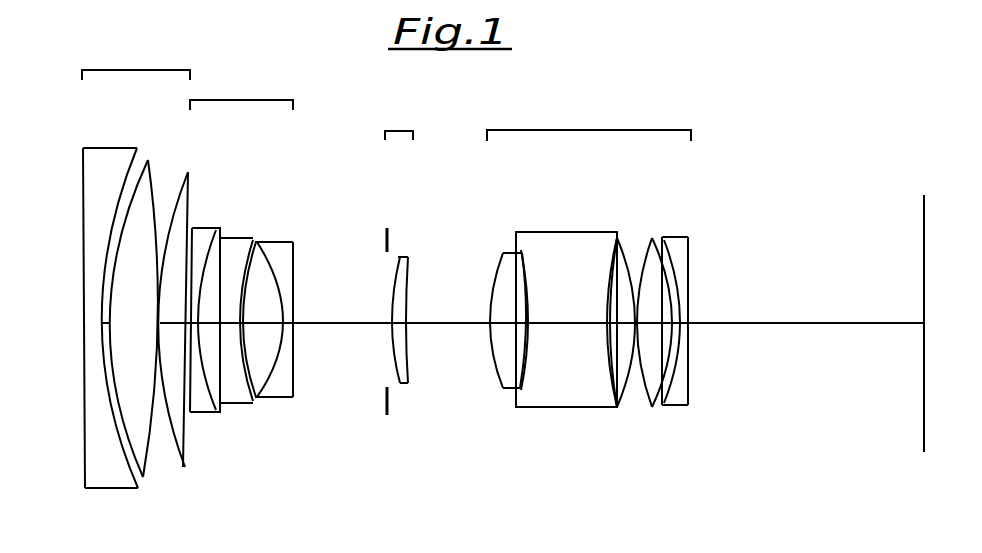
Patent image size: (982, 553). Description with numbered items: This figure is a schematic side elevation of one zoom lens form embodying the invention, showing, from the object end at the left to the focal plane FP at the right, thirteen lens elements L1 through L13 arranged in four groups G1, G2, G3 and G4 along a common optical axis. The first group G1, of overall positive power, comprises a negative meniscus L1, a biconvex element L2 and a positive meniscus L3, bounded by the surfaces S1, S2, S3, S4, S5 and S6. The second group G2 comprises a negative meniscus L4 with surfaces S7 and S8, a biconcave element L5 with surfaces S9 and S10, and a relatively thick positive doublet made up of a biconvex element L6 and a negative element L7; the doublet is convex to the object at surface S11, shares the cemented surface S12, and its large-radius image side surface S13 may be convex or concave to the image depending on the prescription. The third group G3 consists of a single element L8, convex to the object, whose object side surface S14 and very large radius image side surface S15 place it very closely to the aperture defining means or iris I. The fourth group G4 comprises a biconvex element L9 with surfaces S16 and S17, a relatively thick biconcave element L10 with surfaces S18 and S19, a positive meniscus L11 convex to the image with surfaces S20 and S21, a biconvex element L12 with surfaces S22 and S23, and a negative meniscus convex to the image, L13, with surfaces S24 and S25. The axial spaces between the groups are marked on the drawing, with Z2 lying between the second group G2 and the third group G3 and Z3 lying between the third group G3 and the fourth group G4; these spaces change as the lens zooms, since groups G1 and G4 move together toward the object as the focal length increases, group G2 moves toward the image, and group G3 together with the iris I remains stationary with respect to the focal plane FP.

The first lens group G1 is at (136, 61).
The second lens group G2 is at (241, 92).
The third lens group G3 is at (396, 120).
The fourth lens group G4 is at (589, 122).
The negative meniscus L1 is at (83, 323).
The biconvex element L2 is at (147, 333).
The positive meniscus L3 is at (194, 322).
The negative meniscus L4 is at (225, 346).
The biconcave element L5 is at (251, 332).
The biconvex element L6 is at (293, 310).
The negative element L7 is at (311, 298).
The single element L8 is at (398, 303).
The biconvex element L9 is at (484, 305).
The biconcave element L10 is at (542, 316).
The positive meniscus L11 is at (633, 344).
The biconvex element L12 is at (687, 318).
The negative meniscus L13 is at (707, 302).
The lens element surface S1 is at (84, 452).
The lens element surface S2 is at (122, 455).
The lens element surface S3 is at (140, 480).
The lens element surface S4 is at (150, 478).
The lens element surface S5 is at (172, 452).
The lens element surface S6 is at (185, 452).
The lens element surface S7 is at (193, 422).
The lens element surface S8 is at (216, 408).
The lens element surface S9 is at (223, 402).
The lens element surface S10 is at (243, 396).
The lens element surface S11 is at (258, 382).
The lens element surface S12 is at (283, 376).
The lens element surface S13 is at (293, 345).
The lens element surface S14 is at (399, 365).
The lens element surface S15 is at (408, 372).
The lens element surface S16 is at (492, 360).
The lens element surface S17 is at (515, 378).
The lens element surface S18 is at (519, 398).
The lens element surface S19 is at (609, 384).
The lens element surface S20 is at (620, 394).
The lens element surface S21 is at (637, 386).
The lens element surface S22 is at (648, 384).
The lens element surface S23 is at (675, 400).
The lens element surface S24 is at (674, 384).
The lens element surface S25 is at (690, 360).
The iris I is at (383, 242).
The axial space Z2 is at (345, 311).
The axial space Z3 is at (450, 311).
The focal plane FP is at (924, 250).